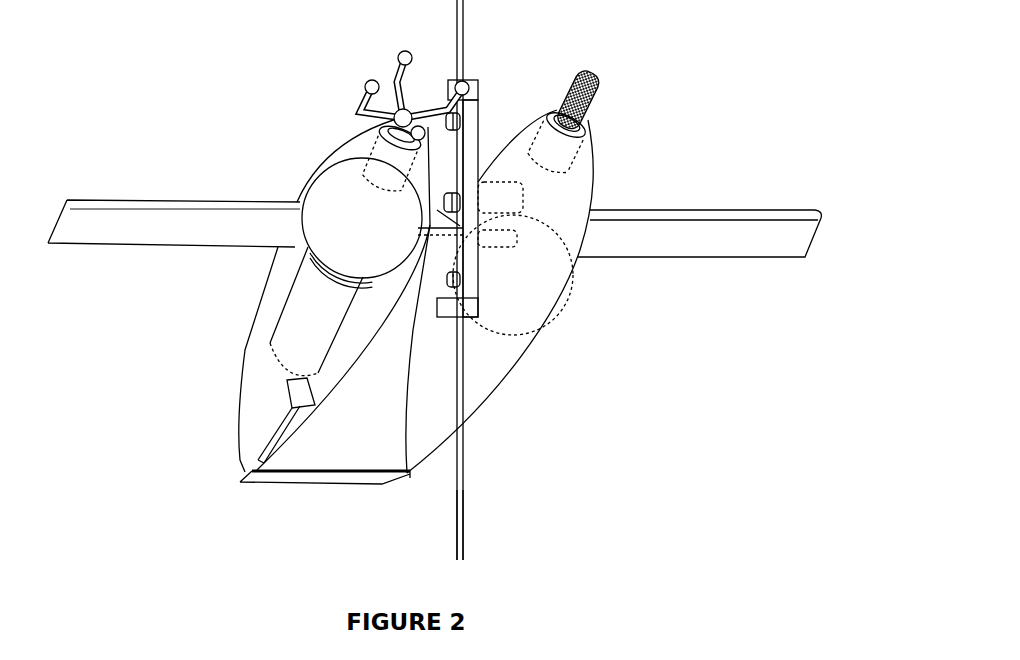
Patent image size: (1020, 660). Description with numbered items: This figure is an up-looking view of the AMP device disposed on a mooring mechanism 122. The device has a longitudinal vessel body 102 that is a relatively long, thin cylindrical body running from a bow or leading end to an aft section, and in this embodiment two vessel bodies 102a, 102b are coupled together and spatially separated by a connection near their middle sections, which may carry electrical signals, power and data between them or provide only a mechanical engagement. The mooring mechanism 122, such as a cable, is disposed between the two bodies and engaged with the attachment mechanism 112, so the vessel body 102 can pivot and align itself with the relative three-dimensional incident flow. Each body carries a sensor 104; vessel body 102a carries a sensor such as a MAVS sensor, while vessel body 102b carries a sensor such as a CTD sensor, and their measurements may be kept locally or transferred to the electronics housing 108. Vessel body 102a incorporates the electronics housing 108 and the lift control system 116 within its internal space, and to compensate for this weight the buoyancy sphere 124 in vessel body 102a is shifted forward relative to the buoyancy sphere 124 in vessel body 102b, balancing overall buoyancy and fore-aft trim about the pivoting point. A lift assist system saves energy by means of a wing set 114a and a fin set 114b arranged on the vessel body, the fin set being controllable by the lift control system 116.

The longitudinal vessel body 102 is at (489, 290).
The vessel body 102a is at (260, 267).
The vessel body 102b is at (615, 275).
The sensor 104 is at (348, 78).
The electronics housing 108 is at (273, 350).
The attachment mechanism 112 is at (512, 88).
The wing set 114a is at (112, 235).
The fin set 114b is at (307, 478).
The lift control system 116 is at (270, 437).
The mooring mechanism 122 is at (457, 495).
The buoyancy sphere 124 is at (328, 178).